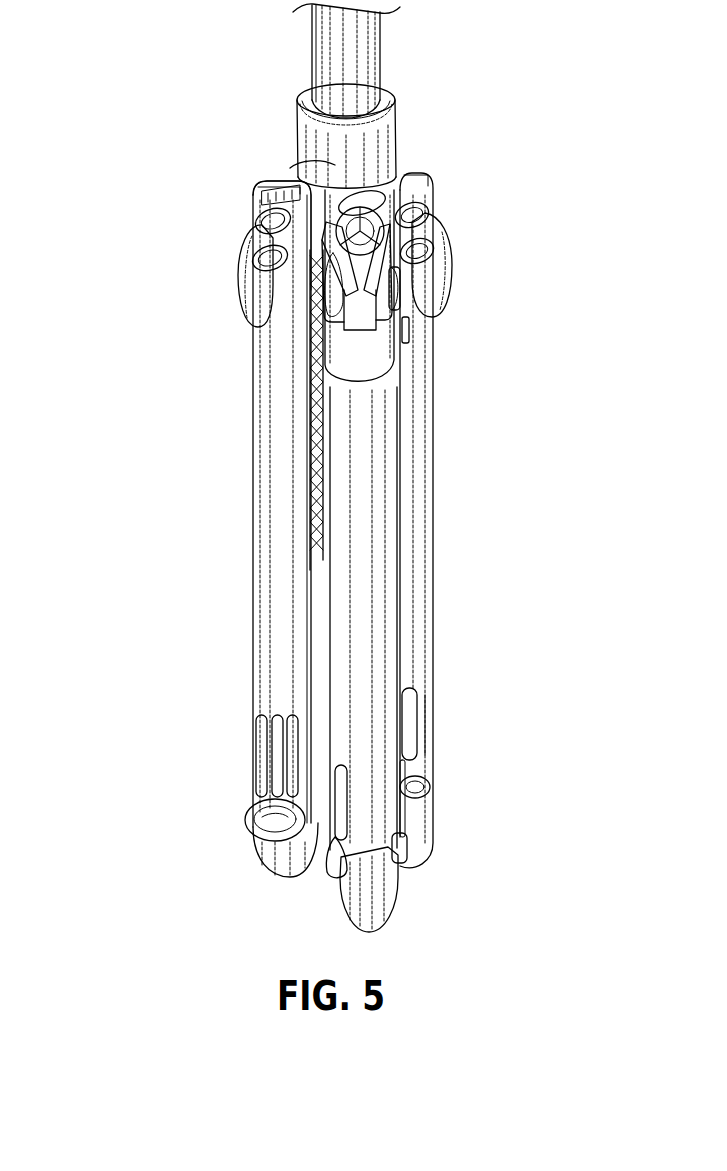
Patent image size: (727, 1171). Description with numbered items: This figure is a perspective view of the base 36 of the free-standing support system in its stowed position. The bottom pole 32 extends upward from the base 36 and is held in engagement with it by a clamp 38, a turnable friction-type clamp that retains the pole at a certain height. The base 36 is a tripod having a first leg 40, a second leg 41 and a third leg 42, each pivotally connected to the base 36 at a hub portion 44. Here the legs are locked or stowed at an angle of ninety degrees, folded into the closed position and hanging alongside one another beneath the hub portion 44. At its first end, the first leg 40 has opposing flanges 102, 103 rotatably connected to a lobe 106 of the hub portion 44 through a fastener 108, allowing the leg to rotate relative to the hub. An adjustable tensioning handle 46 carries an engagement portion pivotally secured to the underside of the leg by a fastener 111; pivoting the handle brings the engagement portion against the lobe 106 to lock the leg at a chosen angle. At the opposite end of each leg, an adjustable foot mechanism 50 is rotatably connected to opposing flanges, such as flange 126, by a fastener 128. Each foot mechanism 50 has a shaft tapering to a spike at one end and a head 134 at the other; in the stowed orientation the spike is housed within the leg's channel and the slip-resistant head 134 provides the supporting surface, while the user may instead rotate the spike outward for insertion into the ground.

The bottom pole 32 is at (383, 63).
The base 36 is at (132, 196).
The clamp 38 is at (402, 131).
The first leg 40 is at (251, 625).
The second leg 41 is at (437, 416).
The third leg 42 is at (404, 512).
The hub portion 44 is at (385, 195).
The adjustable tensioning handle 46 is at (452, 262).
The adjustable foot mechanism 50 is at (410, 909).
The flange 102 is at (293, 152).
The flange 103 is at (254, 193).
The lobe 106 is at (262, 175).
The fastener 108 is at (252, 262).
The fastener 111 is at (240, 293).
The flange 126 is at (286, 878).
The fastener 128 is at (272, 817).
The head 134 is at (343, 907).